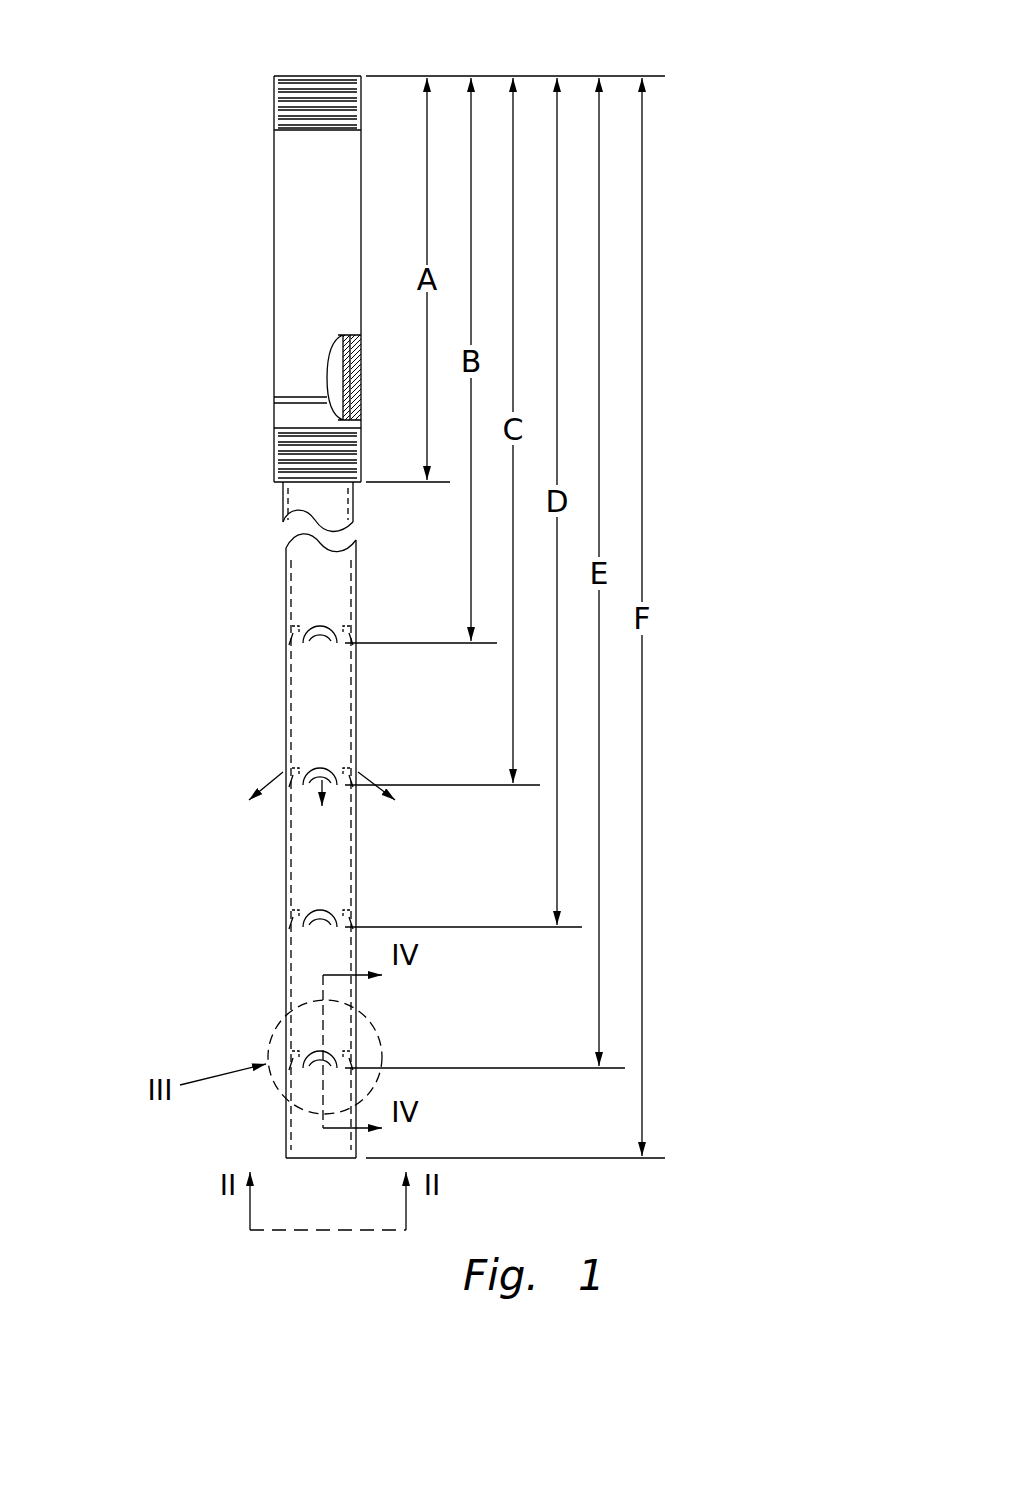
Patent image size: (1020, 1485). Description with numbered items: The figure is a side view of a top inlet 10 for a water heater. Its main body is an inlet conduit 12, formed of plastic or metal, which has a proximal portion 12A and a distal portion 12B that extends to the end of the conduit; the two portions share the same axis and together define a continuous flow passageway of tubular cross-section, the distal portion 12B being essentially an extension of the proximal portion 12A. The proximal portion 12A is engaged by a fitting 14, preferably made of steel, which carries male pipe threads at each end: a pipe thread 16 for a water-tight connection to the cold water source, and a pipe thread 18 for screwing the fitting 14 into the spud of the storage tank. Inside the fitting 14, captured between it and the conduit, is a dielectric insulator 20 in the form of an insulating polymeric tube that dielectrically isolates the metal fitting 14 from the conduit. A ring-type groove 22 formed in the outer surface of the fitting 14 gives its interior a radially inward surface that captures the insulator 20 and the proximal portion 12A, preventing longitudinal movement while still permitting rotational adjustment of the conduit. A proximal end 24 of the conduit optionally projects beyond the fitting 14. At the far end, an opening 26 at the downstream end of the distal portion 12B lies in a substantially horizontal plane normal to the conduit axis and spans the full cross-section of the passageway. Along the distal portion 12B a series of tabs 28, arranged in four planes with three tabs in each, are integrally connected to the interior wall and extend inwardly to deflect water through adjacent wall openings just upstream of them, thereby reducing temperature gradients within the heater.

The inlet 10 is at (265, 540).
The inlet conduit 12 is at (283, 700).
The proximal portion 12A is at (357, 373).
The distal portion 12B is at (283, 975).
The fitting 14 is at (272, 215).
The pipe thread 16 is at (268, 100).
The pipe thread 18 is at (272, 458).
The dielectric insulator 20 is at (338, 339).
The ring-type groove 22 is at (272, 397).
The proximal end 24 is at (300, 74).
The opening 26 is at (315, 1160).
The tabs 28 is at (293, 905).